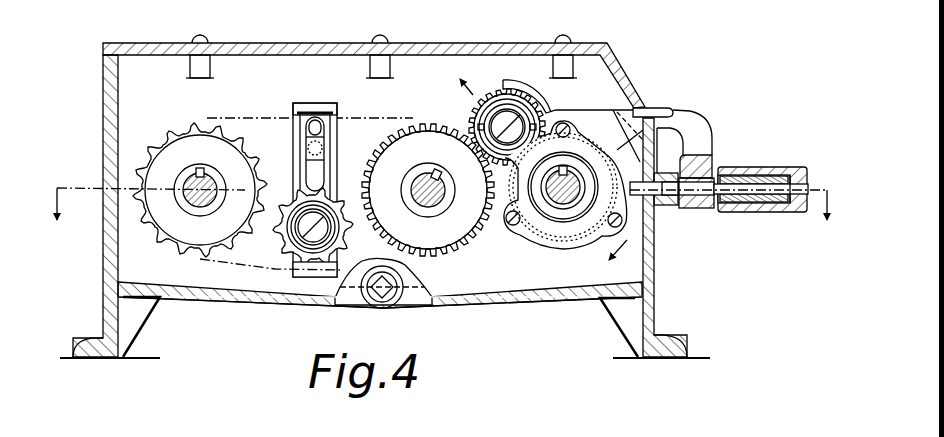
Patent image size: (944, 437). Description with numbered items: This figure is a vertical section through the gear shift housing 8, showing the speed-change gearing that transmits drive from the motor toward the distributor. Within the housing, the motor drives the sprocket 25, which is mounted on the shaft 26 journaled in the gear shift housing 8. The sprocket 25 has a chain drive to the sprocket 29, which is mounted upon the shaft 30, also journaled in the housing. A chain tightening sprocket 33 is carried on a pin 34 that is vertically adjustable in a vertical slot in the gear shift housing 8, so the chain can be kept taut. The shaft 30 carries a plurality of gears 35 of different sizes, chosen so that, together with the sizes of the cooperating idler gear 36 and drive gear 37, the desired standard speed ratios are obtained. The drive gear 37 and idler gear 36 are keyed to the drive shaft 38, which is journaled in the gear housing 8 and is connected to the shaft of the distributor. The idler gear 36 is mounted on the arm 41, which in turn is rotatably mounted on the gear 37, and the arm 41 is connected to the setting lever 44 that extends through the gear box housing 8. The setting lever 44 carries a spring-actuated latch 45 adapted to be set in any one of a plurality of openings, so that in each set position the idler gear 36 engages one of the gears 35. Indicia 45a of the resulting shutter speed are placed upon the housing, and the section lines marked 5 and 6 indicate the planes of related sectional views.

The gear shift housing 8 is at (257, 40).
The section line 5- 5 is at (443, 217).
The section line 6- 6 is at (417, 175).
The sprocket 25 is at (200, 179).
The shaft 26 is at (200, 207).
The sprocket 29 is at (365, 163).
The shaft 30 is at (431, 202).
The chain tightening sprocket 33 is at (270, 262).
The pin 34 is at (322, 238).
The gears 35 is at (428, 173).
The idler gear 36 is at (500, 92).
The drive gear 37 is at (528, 234).
The drive shaft 38 is at (566, 202).
The arm 41 is at (607, 113).
The setting lever 44 is at (678, 143).
The spring-actuated latch 45 is at (758, 168).
The indicia 45a is at (647, 105).